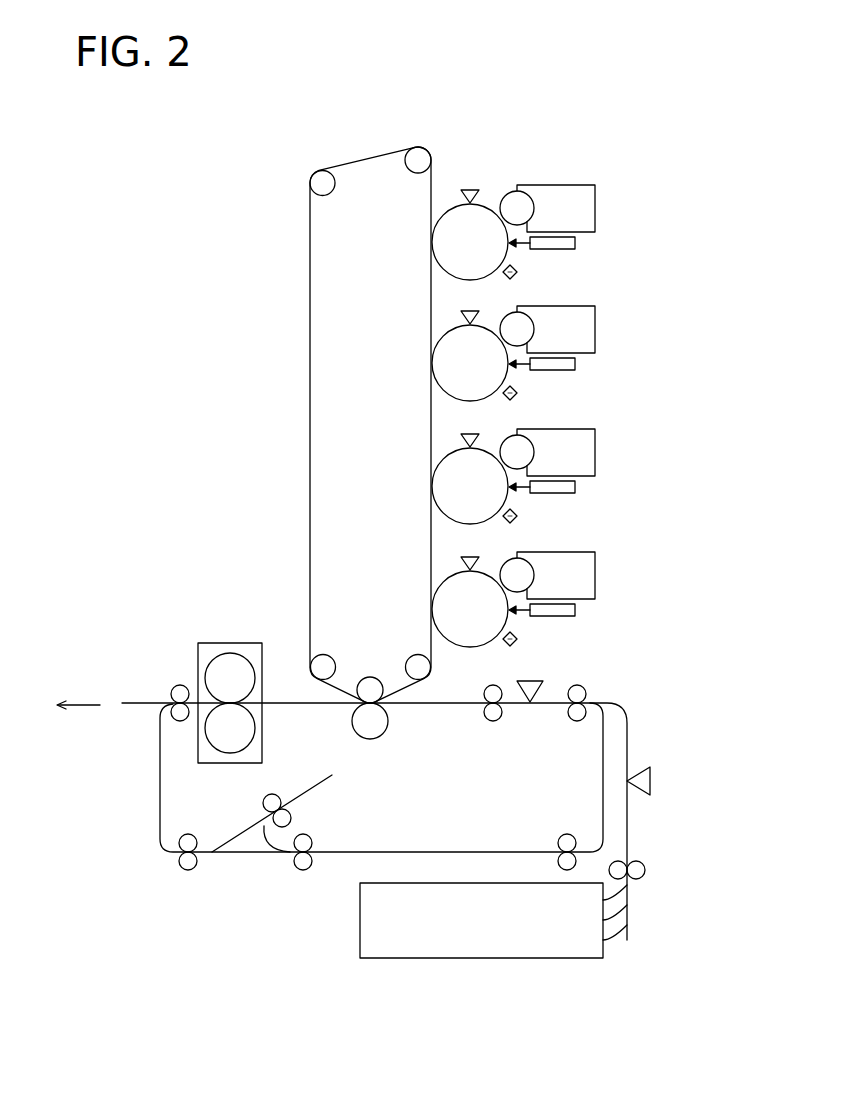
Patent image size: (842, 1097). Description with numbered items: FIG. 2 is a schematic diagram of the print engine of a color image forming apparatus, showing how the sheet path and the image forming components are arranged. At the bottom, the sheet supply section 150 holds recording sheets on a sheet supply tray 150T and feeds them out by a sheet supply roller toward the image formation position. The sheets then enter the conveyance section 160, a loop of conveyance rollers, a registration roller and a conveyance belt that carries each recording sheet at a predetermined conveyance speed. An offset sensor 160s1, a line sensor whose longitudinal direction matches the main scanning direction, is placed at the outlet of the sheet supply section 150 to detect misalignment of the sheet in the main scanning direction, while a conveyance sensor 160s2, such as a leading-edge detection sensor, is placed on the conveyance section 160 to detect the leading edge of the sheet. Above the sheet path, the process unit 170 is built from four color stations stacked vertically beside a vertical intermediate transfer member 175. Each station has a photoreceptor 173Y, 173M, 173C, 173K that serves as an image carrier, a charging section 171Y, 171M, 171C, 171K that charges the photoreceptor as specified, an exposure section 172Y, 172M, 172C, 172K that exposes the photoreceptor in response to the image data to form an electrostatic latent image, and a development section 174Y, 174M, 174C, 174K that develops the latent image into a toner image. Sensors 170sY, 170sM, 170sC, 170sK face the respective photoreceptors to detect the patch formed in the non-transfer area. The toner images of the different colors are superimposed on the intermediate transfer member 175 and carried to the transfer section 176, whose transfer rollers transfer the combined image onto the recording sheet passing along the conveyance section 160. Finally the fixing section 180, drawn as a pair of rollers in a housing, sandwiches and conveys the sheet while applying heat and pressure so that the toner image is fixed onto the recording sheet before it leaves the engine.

The process unit 170 is at (499, 103).
The intermediate transfer member 175 is at (362, 160).
The transfer section 176 is at (383, 736).
The fixing section 180 is at (222, 643).
The conveyance section 160 is at (485, 813).
The offset sensor 160s1 is at (652, 781).
The conveyance sensor 160s2 is at (530, 680).
The sheet supply section 150 is at (630, 960).
The sheet supply tray 150T is at (481, 920).
The sensor 170sY is at (468, 188).
The sensor 170sM is at (469, 310).
The sensor 170sC is at (469, 433).
The sensor 170sK is at (469, 556).
The charging section 171Y is at (518, 272).
The charging section 171M is at (518, 393).
The charging section 171C is at (518, 516).
The charging section 171K is at (518, 639).
The exposure section 172Y is at (576, 243).
The exposure section 172M is at (576, 364).
The exposure section 172C is at (576, 487).
The exposure section 172K is at (576, 610).
The photoreceptor 173Y is at (500, 202).
The photoreceptor 173M is at (501, 326).
The photoreceptor 173C is at (501, 449).
The photoreceptor 173K is at (501, 572).
The development section 174Y is at (552, 185).
The development section 174M is at (565, 306).
The development section 174C is at (565, 429).
The development section 174K is at (565, 552).